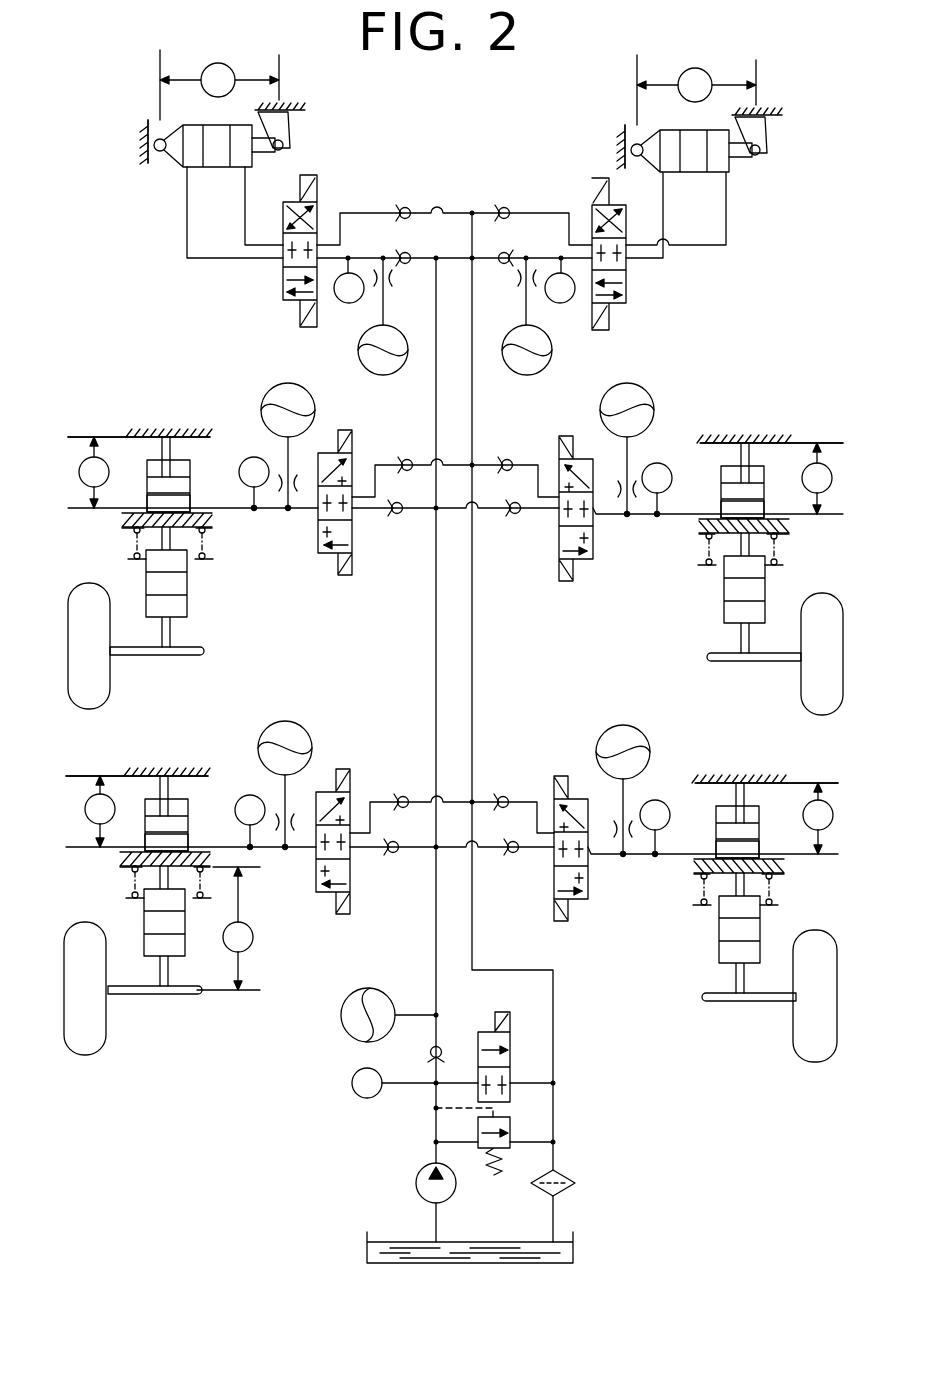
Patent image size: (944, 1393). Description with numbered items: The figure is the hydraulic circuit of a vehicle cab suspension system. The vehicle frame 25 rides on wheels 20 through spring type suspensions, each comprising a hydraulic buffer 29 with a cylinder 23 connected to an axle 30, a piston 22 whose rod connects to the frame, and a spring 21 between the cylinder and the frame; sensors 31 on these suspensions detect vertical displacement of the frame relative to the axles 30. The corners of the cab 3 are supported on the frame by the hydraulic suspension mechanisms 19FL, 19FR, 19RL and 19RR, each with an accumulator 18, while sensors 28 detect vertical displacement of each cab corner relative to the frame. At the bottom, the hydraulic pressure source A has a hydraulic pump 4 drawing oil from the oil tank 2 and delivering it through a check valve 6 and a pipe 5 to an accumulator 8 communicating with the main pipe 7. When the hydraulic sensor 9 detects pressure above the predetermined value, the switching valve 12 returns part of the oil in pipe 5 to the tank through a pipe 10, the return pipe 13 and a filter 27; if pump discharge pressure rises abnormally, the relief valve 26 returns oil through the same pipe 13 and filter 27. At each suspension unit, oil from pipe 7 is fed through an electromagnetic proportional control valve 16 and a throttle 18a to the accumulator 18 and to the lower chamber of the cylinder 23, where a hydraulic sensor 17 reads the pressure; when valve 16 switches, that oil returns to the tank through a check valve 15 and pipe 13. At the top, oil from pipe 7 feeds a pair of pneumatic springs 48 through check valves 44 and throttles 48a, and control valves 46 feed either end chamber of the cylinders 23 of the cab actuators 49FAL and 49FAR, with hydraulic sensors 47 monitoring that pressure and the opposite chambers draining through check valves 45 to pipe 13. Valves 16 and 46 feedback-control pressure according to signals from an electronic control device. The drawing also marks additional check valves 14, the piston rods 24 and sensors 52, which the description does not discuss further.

The oil tank 2 is at (500, 1248).
The cab 3 is at (454, 427).
The hydraulic pump 4 is at (415, 1183).
The pipe 5 is at (434, 1128).
The check valve 6 is at (440, 1047).
The pipe 7 is at (435, 934).
The accumulator 8 is at (349, 996).
The hydraulic sensor 9 is at (352, 1083).
The pipe 10 is at (462, 1083).
The switching valve 12 is at (509, 1040).
The pipe 13 is at (474, 934).
The check valve 14 is at (395, 514).
The check valve 15 is at (405, 459).
The control valve 16 is at (454, 659).
The hydraulic sensor 17 is at (458, 626).
The accumulator 18 is at (456, 610).
The orifice or throttle 18a is at (459, 689).
The hydraulic suspension mechanism 19FL is at (122, 422).
The hydraulic suspension mechanism 19FR is at (780, 428).
The hydraulic suspension mechanism 19RL is at (132, 772).
The hydraulic suspension mechanism 19RR is at (775, 772).
The wheel 20 is at (446, 804).
The spring 21 is at (431, 725).
The piston 22 is at (219, 130).
The cylinder 23 is at (684, 204).
The piston rod 24 is at (270, 176).
The vehicle frame 25 is at (459, 507).
The relief valve 26 is at (508, 1131).
The filter 27 is at (562, 1178).
The sensor 28 is at (456, 645).
The hydraulic shock-absorber or buffer 29 is at (454, 760).
The axle 30 is at (454, 850).
The sensor 31 is at (254, 928).
The check valve 44 is at (400, 253).
The check valve 45 is at (404, 207).
The control valve 46 is at (320, 207).
The hydraulic sensor 47 is at (347, 303).
The pneumatic spring 48 is at (405, 359).
The throttle 48a is at (393, 281).
The hydraulic cab actuator 49FAL is at (142, 120).
The hydraulic cab actuator 49FAR is at (624, 105).
The stroke sensor 52 is at (229, 65).
The hydraulic pressure source A is at (482, 1020).